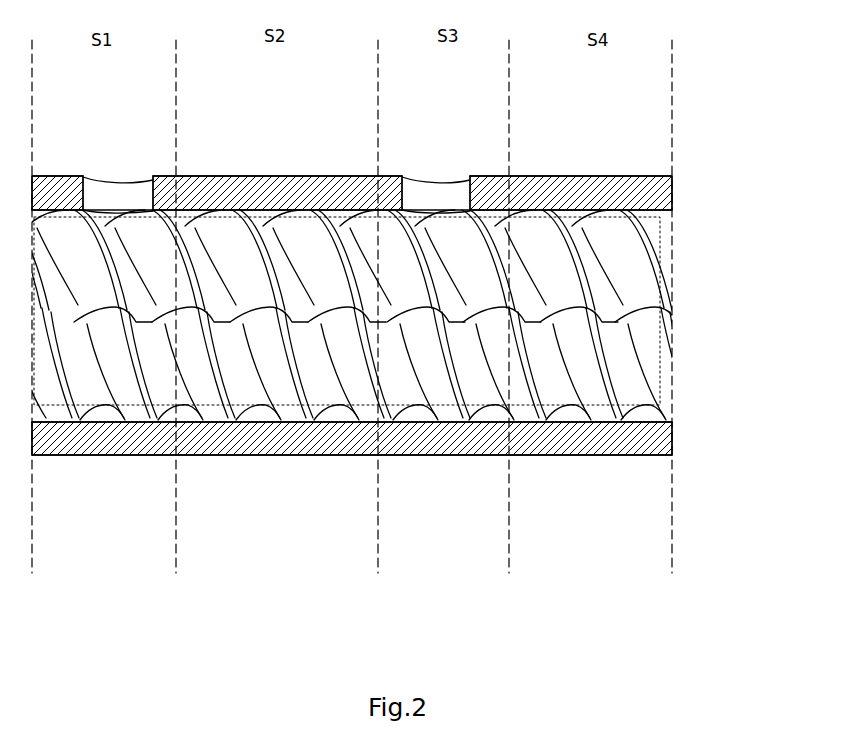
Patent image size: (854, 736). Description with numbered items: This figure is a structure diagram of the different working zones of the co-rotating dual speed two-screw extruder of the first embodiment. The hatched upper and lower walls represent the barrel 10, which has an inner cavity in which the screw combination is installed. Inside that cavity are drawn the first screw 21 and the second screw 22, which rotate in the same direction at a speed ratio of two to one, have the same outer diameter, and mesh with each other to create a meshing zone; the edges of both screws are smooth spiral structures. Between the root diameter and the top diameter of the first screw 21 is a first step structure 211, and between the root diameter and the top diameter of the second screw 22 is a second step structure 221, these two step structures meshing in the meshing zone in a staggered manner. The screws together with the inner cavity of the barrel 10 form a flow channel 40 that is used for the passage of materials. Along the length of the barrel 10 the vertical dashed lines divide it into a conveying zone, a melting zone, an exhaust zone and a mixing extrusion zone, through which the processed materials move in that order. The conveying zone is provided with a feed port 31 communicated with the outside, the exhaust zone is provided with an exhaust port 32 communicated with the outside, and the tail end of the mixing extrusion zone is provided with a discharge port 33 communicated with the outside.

The barrel 10 is at (637, 455).
The first screw 21 is at (662, 258).
The second screw 22 is at (662, 393).
The feed port 31 is at (120, 193).
The exhaust port 32 is at (437, 197).
The discharge port 33 is at (662, 315).
The flow channel 40 is at (187, 413).
The first step structure 211 is at (337, 230).
The second step structure 221 is at (518, 395).